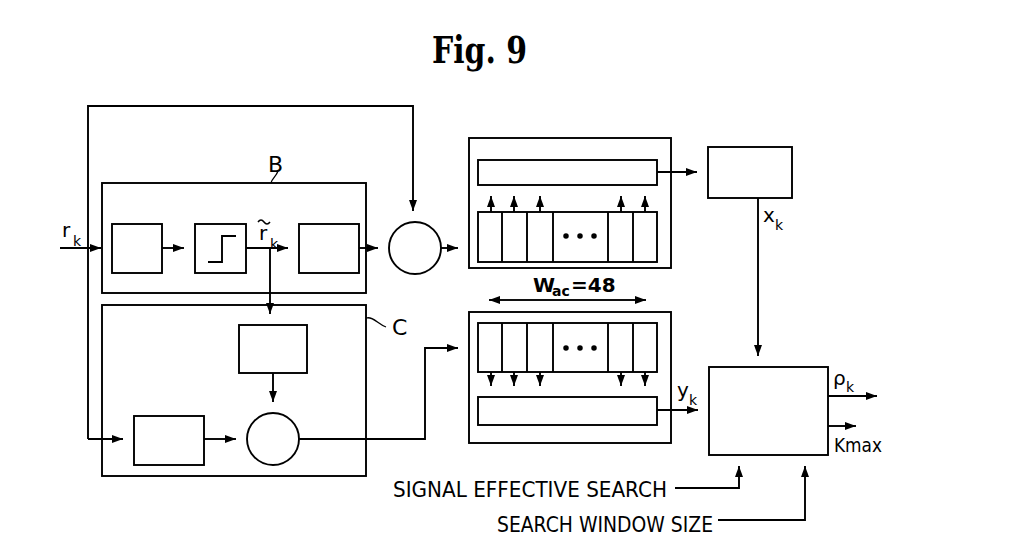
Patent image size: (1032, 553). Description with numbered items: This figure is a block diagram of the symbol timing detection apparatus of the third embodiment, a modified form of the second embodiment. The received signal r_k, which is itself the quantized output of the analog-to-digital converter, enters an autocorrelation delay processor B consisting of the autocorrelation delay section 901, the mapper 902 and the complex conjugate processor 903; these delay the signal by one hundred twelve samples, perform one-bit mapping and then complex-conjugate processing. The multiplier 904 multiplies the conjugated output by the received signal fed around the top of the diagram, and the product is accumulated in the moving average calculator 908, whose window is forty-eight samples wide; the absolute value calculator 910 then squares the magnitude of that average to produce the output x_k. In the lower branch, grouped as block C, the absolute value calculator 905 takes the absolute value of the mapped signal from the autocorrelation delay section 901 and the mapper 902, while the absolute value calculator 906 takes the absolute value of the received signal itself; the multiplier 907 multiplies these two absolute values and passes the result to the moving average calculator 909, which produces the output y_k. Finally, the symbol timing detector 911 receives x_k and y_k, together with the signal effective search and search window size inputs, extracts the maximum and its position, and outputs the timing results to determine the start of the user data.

The autocorrelation delay section 901 is at (137, 224).
The mapper 902 is at (218, 224).
The complex conjugate processor 903 is at (322, 224).
The multiplier 904 is at (428, 225).
The absolute value calculator 905 is at (239, 345).
The absolute value calculator 906 is at (176, 416).
The multiplier 907 is at (286, 416).
The moving average calculator 908 is at (624, 138).
The moving average calculator 909 is at (671, 349).
The absolute value calculator 910 is at (739, 147).
The symbol timing detector 911 is at (790, 367).